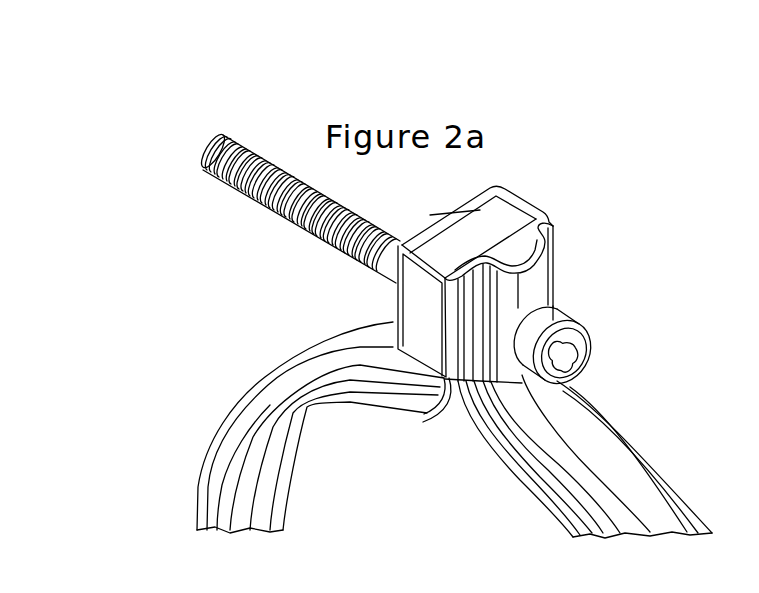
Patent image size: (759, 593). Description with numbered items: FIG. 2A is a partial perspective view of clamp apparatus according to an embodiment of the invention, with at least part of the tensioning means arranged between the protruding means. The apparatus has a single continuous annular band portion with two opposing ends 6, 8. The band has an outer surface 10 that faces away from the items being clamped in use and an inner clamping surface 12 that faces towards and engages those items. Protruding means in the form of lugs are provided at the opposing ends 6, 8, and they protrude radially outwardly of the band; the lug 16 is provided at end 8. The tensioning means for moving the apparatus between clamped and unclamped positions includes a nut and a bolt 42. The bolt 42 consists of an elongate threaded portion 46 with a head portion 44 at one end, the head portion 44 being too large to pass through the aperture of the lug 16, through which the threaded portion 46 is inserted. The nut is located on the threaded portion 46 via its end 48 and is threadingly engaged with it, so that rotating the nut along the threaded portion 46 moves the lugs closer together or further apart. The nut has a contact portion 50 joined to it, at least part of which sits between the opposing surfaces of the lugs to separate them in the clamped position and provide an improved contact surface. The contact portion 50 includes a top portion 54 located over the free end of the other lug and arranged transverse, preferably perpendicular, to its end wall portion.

The opposing end 6 is at (420, 422).
The opposing end 8 is at (466, 437).
The outer surface 10 is at (622, 470).
The inner clamping surface 12 is at (258, 491).
The lug 16 is at (532, 288).
The bolt 42 is at (319, 266).
The head portion 44 is at (552, 314).
The threaded portion 46 is at (293, 222).
The end 48 is at (214, 128).
The contact portion 50 is at (547, 207).
The top portion 54 is at (490, 213).